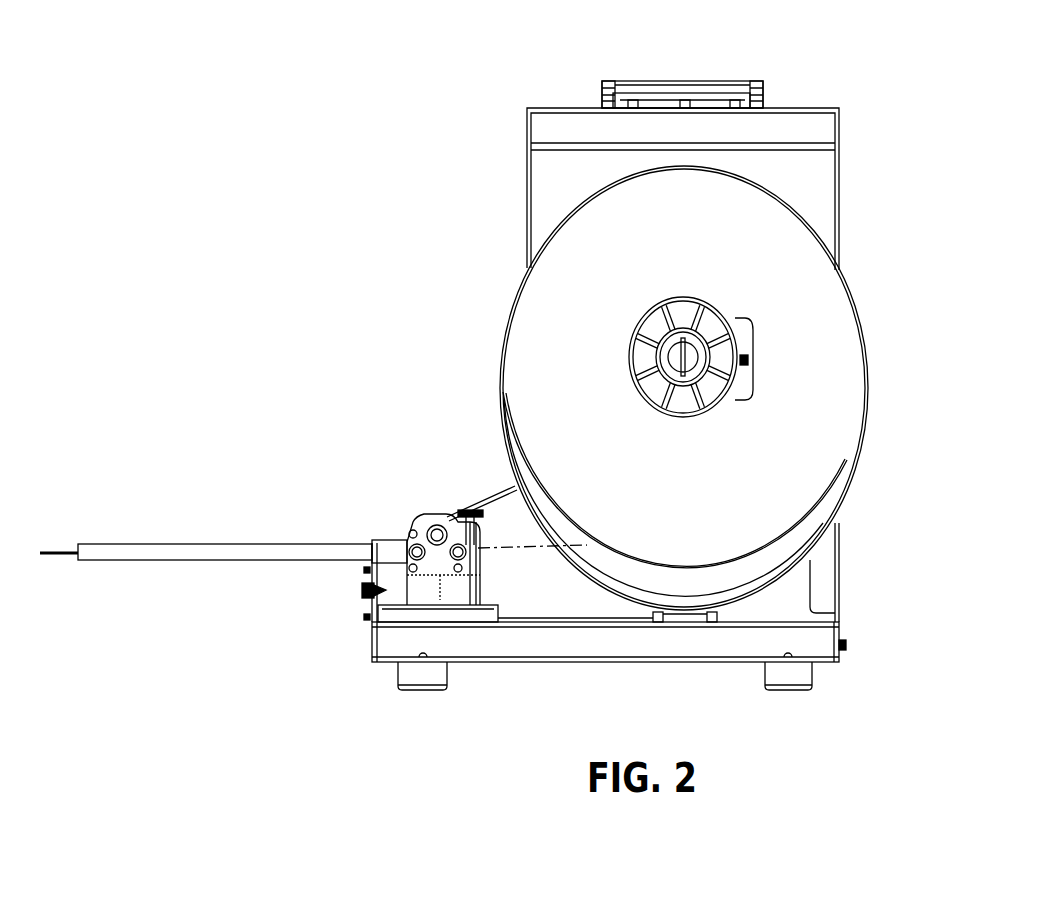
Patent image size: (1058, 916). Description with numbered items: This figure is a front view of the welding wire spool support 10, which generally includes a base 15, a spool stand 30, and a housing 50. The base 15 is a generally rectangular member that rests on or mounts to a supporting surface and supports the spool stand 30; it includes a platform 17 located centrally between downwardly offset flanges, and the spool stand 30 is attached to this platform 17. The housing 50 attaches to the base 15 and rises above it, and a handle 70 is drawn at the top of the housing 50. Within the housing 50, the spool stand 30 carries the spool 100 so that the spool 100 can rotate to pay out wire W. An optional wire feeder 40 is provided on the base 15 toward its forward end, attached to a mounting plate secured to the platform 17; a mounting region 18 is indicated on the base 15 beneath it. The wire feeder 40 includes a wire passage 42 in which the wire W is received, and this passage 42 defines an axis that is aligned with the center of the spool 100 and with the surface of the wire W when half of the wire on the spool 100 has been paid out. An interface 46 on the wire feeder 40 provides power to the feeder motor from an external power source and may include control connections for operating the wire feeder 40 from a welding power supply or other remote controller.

The welding wire spool support 10 is at (474, 216).
The base 15 is at (508, 665).
The platform 17 is at (717, 645).
The mounting surface 18 is at (549, 621).
The spool stand 30 is at (753, 275).
The wire feeder 40 is at (411, 509).
The wire passage 42 is at (480, 548).
The interface 46 is at (360, 592).
The housing 50 is at (789, 88).
The handle 70 is at (689, 76).
The spool 100 is at (528, 346).
The wire W is at (521, 546).